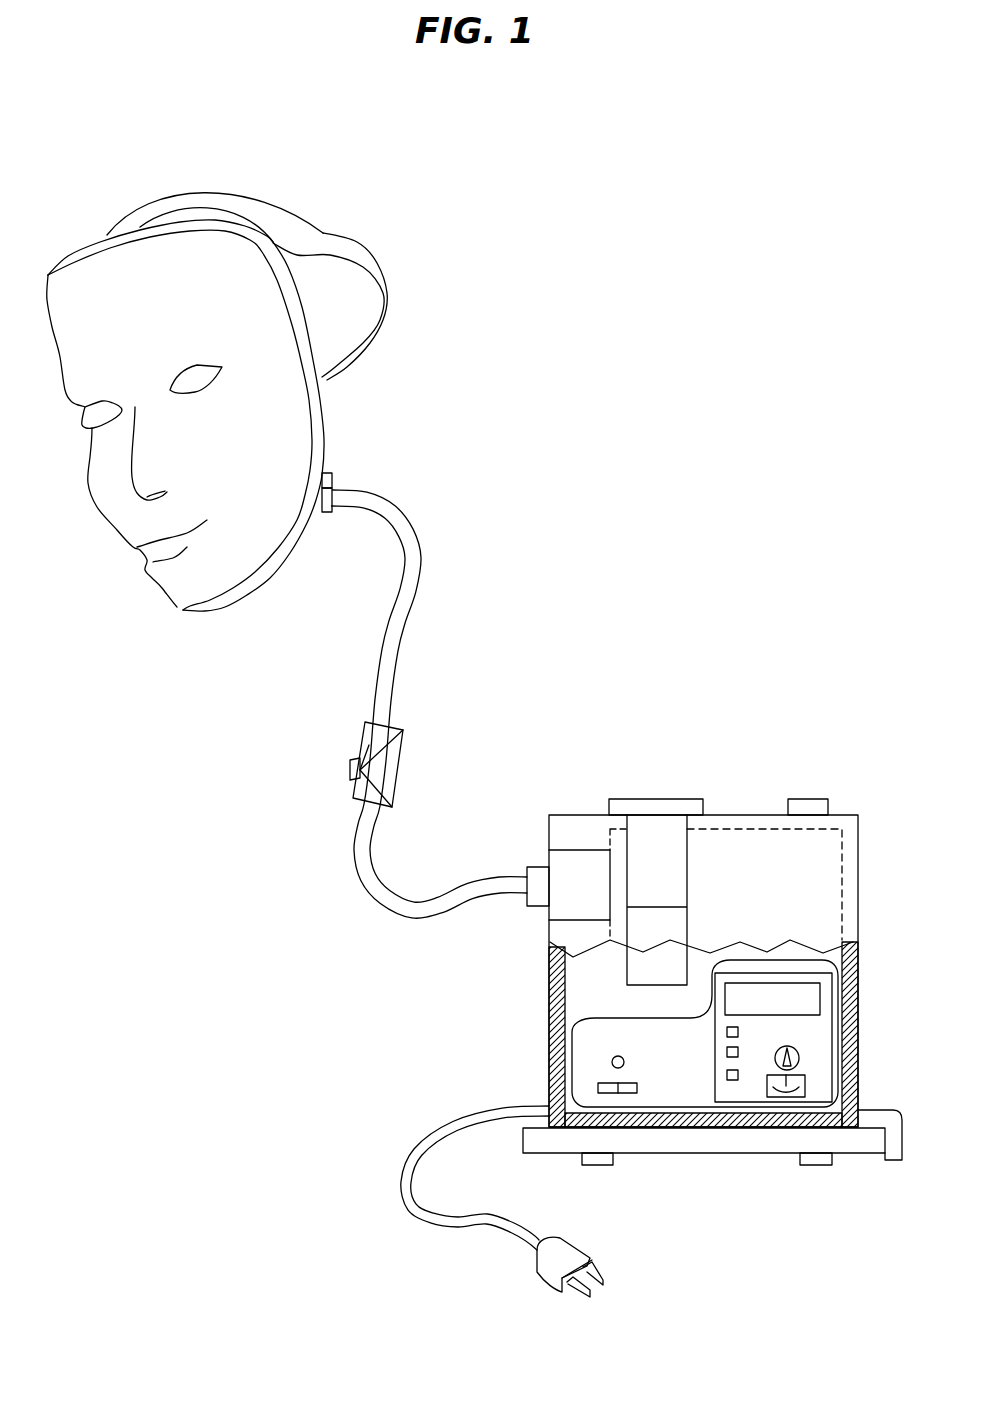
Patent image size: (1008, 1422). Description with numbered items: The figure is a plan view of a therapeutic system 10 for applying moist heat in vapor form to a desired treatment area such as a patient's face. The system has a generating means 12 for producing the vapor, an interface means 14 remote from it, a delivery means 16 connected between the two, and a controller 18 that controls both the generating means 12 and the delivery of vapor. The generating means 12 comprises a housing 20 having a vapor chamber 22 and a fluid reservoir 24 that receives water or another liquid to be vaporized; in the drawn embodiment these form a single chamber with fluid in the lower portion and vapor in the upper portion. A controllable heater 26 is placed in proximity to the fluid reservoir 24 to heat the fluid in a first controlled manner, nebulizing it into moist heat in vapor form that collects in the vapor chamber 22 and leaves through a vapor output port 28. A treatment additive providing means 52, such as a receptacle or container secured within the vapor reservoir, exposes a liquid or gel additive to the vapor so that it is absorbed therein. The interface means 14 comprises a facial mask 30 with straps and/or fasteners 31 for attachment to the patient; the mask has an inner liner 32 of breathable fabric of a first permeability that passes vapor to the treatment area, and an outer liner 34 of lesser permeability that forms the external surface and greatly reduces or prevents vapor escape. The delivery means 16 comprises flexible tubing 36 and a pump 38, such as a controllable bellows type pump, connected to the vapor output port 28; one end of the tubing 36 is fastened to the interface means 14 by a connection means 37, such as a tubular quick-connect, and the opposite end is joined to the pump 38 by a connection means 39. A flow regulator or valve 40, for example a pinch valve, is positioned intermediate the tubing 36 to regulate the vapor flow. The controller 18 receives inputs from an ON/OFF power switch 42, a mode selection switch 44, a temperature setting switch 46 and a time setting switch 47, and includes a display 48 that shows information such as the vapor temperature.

The therapeutic system 10 is at (705, 598).
The generating means 12 is at (738, 842).
The interface means 14 is at (292, 427).
The delivery means 16 is at (415, 900).
The controller 18 is at (752, 1092).
The housing 20 is at (858, 837).
The vapor chamber 22 is at (830, 903).
The fluid reservoir 24 is at (583, 993).
The controllable heater 26 is at (557, 1055).
The vapor output port 28 is at (608, 887).
The mask 30 is at (108, 277).
The straps and/or fasteners 31 is at (318, 230).
The inner liner 32 is at (297, 560).
The outer liner 34 is at (218, 590).
The flexible tubing 36 is at (358, 842).
The connection means 37 is at (335, 480).
The pump 38 is at (558, 908).
The connection means 39 is at (532, 868).
The flow regulator or valve 40 is at (395, 750).
The ON/OFF power switch 42 is at (625, 1093).
The mode selection switch 44 is at (727, 1077).
The temperature setting switch 46 is at (792, 1048).
The time setting switch 47 is at (805, 1088).
The display 48 is at (817, 998).
The treatment additive providing means 52 is at (653, 837).